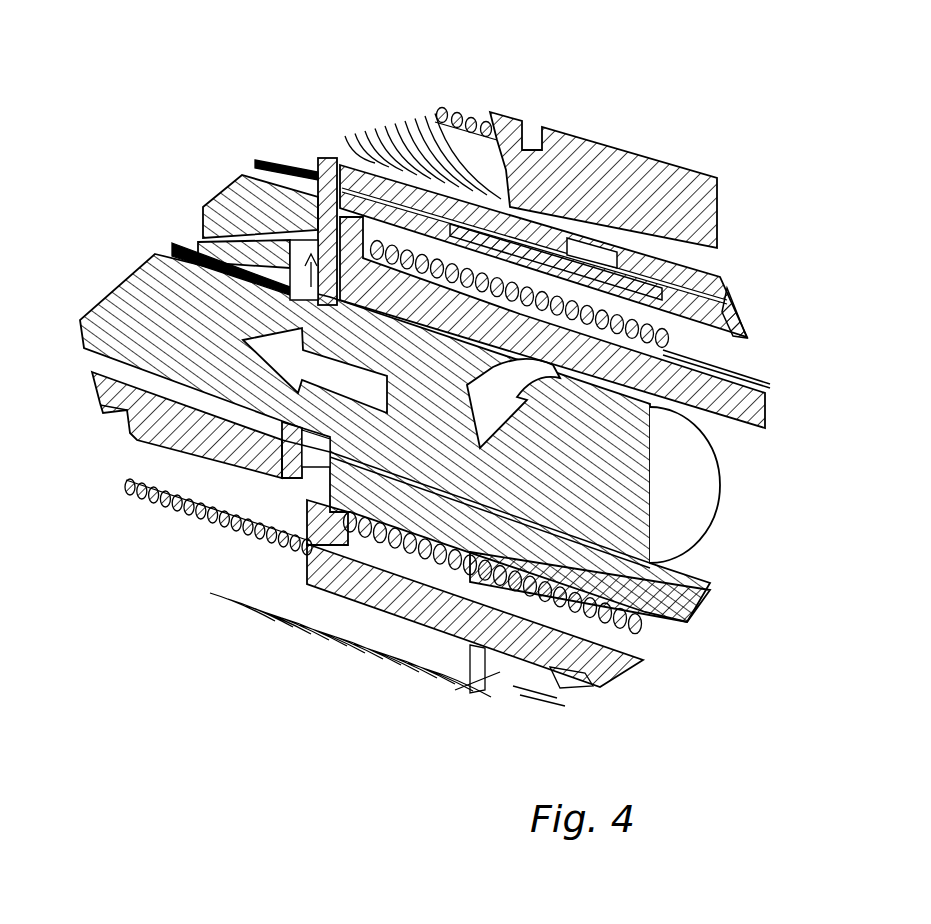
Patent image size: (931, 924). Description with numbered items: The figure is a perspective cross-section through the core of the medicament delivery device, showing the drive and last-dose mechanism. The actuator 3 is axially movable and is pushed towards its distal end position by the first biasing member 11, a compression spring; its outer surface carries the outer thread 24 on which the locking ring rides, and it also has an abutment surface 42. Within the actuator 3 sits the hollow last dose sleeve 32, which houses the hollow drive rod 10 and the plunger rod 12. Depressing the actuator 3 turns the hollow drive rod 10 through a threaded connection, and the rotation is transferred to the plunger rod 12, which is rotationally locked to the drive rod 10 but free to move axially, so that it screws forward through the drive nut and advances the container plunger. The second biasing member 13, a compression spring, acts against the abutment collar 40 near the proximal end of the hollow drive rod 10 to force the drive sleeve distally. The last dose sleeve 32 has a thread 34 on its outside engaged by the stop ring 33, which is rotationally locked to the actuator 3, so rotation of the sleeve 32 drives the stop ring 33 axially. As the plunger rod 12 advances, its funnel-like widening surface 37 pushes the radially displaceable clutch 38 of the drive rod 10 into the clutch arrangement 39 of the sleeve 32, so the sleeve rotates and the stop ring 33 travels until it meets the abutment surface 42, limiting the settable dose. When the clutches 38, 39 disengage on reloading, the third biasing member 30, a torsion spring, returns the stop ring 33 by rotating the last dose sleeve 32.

The actuator 3 is at (640, 173).
The hollow drive rod 10 is at (92, 378).
The first biasing member 11 is at (473, 108).
The plunger rod 12 is at (102, 313).
The second biasing member 13 is at (733, 357).
The outer thread 24 is at (533, 130).
The third biasing member 30 is at (125, 470).
The last dose sleeve 32 is at (730, 310).
The stop ring 33 is at (490, 677).
The thread 34 is at (583, 680).
The funnel-like widening surface 37 is at (310, 423).
The radially displaceable clutch 38 is at (310, 445).
The clutch arrangement 39 is at (307, 500).
The abutment collar 40 is at (337, 240).
The abutment surface 42 is at (587, 163).